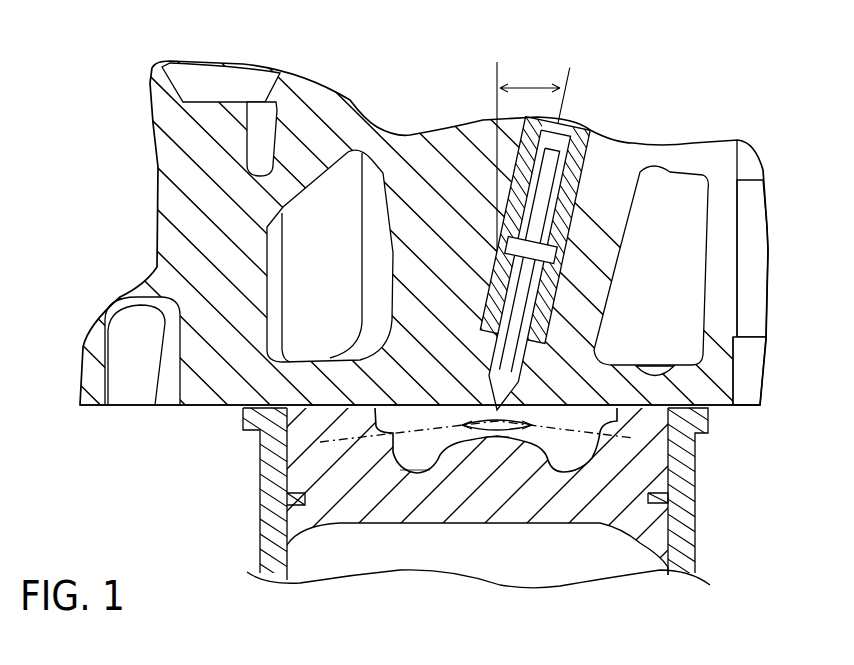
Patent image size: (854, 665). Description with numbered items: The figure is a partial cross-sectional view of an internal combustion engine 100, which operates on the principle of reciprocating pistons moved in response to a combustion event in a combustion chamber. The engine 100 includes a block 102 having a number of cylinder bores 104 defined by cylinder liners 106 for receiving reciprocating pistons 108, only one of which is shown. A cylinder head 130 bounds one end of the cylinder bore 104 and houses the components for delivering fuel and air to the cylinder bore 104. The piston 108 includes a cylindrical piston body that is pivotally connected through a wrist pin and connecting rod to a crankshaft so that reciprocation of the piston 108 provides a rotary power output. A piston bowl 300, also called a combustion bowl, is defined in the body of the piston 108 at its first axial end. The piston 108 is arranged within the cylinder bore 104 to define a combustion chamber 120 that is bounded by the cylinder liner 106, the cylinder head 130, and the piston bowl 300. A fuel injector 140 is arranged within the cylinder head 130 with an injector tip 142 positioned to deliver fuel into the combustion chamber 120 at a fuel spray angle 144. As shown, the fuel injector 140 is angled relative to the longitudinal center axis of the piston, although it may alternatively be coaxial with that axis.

The internal combustion engine 100 is at (232, 42).
The block 102 is at (250, 488).
The cylinder bore 104 is at (570, 556).
The cylinder liner 106 is at (655, 499).
The piston 108 is at (652, 533).
The combustion chamber 120 is at (568, 458).
The cylinder head 130 is at (687, 160).
The fuel injector 140 is at (570, 197).
The injector tip 142 is at (520, 406).
The fuel spray angle 144 is at (490, 436).
The piston bowl 300 is at (413, 455).